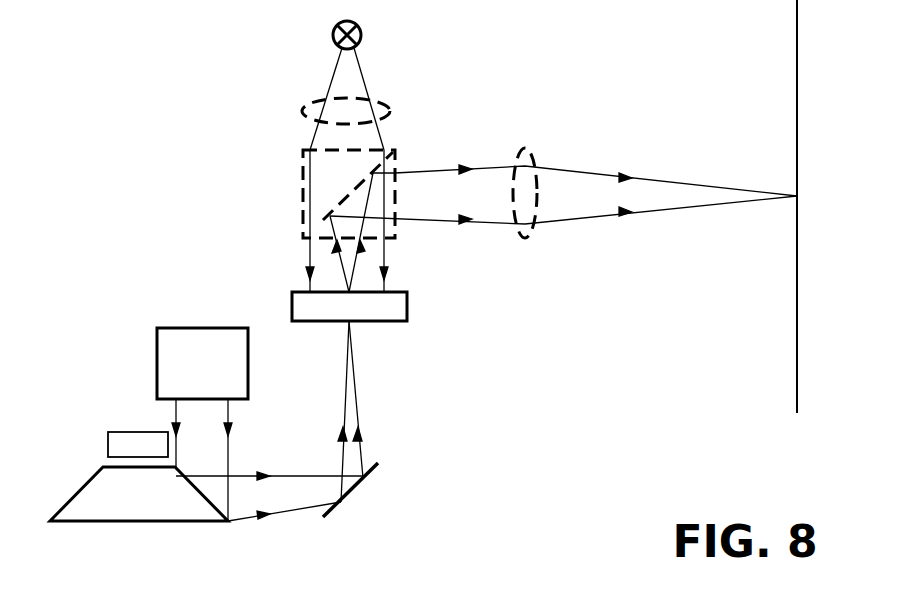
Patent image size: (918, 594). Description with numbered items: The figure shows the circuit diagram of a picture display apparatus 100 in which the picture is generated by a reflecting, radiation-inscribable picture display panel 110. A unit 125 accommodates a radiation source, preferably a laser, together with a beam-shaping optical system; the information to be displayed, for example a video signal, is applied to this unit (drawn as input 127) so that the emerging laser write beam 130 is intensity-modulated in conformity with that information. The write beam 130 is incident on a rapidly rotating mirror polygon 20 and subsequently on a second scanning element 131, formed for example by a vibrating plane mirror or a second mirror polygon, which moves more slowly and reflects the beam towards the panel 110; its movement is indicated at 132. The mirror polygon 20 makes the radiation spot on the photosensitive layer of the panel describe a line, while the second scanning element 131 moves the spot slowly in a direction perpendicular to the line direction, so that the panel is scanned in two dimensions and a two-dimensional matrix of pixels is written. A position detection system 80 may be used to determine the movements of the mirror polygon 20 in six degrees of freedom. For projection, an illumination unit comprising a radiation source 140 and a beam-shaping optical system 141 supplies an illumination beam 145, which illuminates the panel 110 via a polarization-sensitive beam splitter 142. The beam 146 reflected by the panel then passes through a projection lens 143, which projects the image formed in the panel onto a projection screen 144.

The picture display apparatus 100 is at (670, 58).
The mirror polygon 20 is at (72, 498).
The position detection system 80 is at (122, 446).
The picture display panel 110 is at (420, 312).
The unit 125 is at (199, 328).
The control signal input 127 is at (157, 364).
The write beam 130 is at (210, 450).
The second scanning element 131 is at (333, 512).
The mirror tilt adjustment 132 is at (391, 476).
The radiation source 140 is at (332, 34).
The beam-shaping optical system 141 is at (303, 107).
The polarization-sensitive beam splitter 142 is at (300, 182).
The projection lens 143 is at (522, 148).
The projection screen 144 is at (797, 333).
The illumination beam 145 is at (375, 282).
The beam reflected by the panel 146 is at (430, 182).